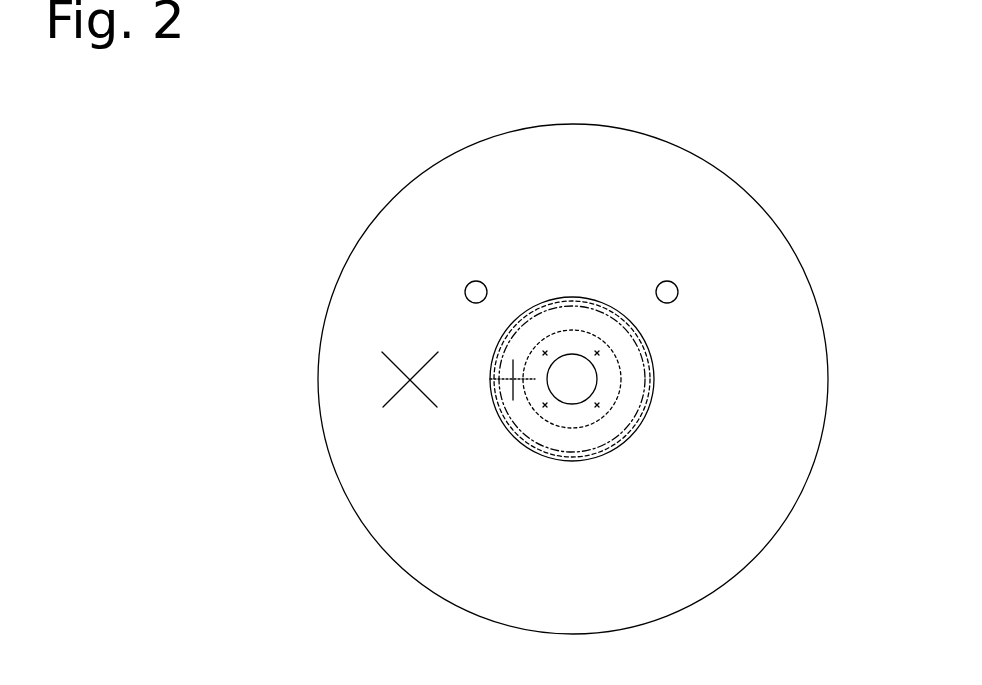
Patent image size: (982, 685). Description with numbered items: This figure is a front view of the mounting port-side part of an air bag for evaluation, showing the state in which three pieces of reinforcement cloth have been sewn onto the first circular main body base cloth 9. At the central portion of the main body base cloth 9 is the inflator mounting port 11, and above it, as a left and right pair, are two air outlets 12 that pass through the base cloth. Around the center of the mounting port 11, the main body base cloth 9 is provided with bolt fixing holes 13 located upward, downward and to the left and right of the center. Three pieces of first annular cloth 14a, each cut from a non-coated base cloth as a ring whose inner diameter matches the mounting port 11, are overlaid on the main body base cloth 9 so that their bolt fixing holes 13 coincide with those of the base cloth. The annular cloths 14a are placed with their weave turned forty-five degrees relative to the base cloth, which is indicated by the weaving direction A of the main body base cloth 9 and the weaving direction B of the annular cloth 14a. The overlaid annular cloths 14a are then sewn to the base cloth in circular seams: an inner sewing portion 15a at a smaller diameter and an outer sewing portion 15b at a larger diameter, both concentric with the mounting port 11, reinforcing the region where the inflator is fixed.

The first main body base cloth 9 is at (573, 348).
The inflator mounting port 11 is at (643, 503).
The air outlet 12 is at (630, 206).
The bolt fixing hole 13 is at (708, 459).
The first annular cloth 14a is at (700, 345).
The sewing portion 15a is at (518, 507).
The sewing portion 15b is at (451, 422).
The weaving direction of main body base cloth A is at (372, 314).
The weaving direction of annular cloth B is at (456, 249).